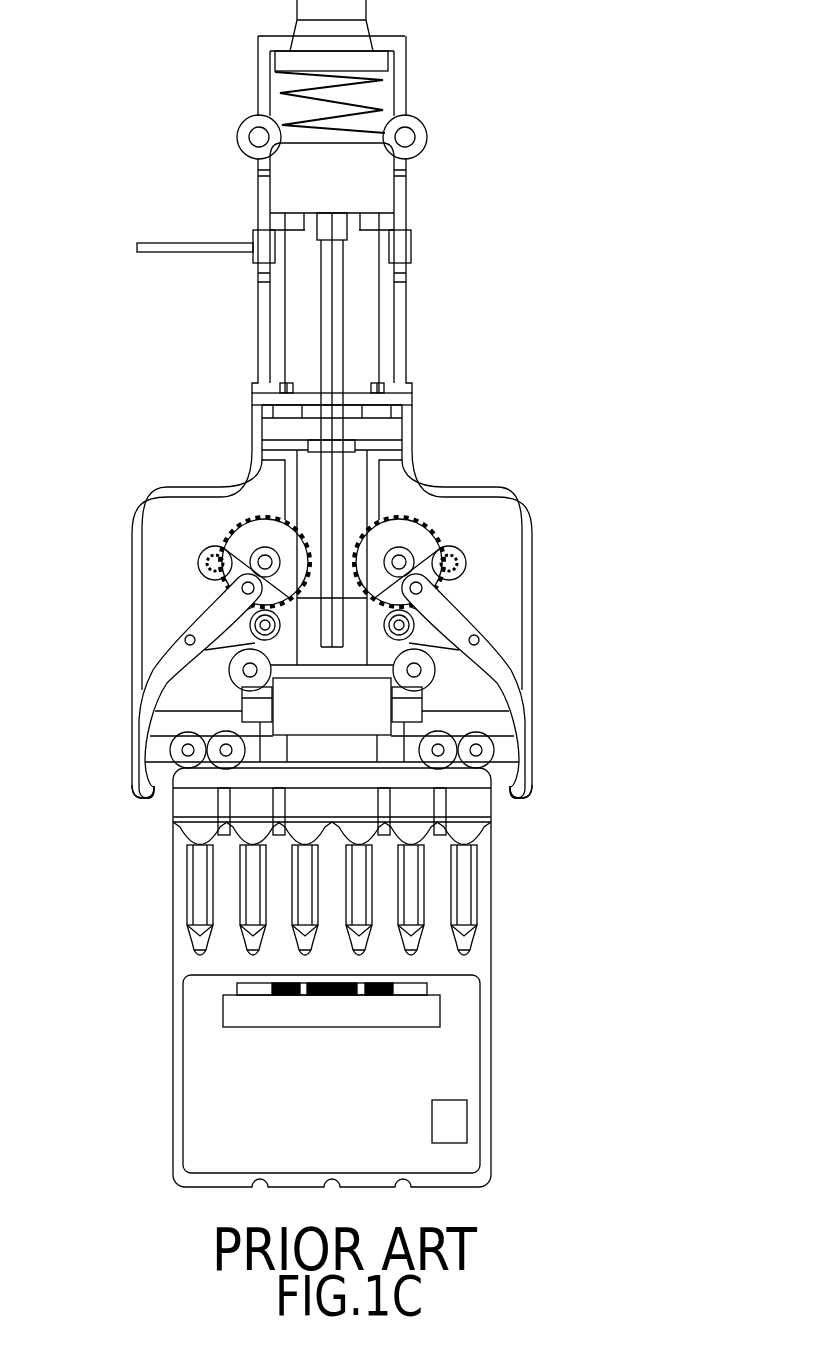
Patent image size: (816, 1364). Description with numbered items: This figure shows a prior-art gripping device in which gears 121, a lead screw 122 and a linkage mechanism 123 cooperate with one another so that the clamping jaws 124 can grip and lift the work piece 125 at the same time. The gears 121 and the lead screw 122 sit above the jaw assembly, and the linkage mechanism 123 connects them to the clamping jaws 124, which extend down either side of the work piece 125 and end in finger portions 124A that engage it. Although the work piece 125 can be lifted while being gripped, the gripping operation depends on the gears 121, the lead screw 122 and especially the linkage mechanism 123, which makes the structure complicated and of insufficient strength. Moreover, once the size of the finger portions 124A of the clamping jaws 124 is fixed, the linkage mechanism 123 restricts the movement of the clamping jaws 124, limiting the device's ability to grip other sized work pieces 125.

The gears 121 is at (248, 513).
The lead screw 122 is at (368, 492).
The linkage mechanism 123 is at (190, 608).
The clamping jaws 124 is at (140, 728).
The finger portions 124A is at (145, 793).
The work piece 125 is at (503, 912).